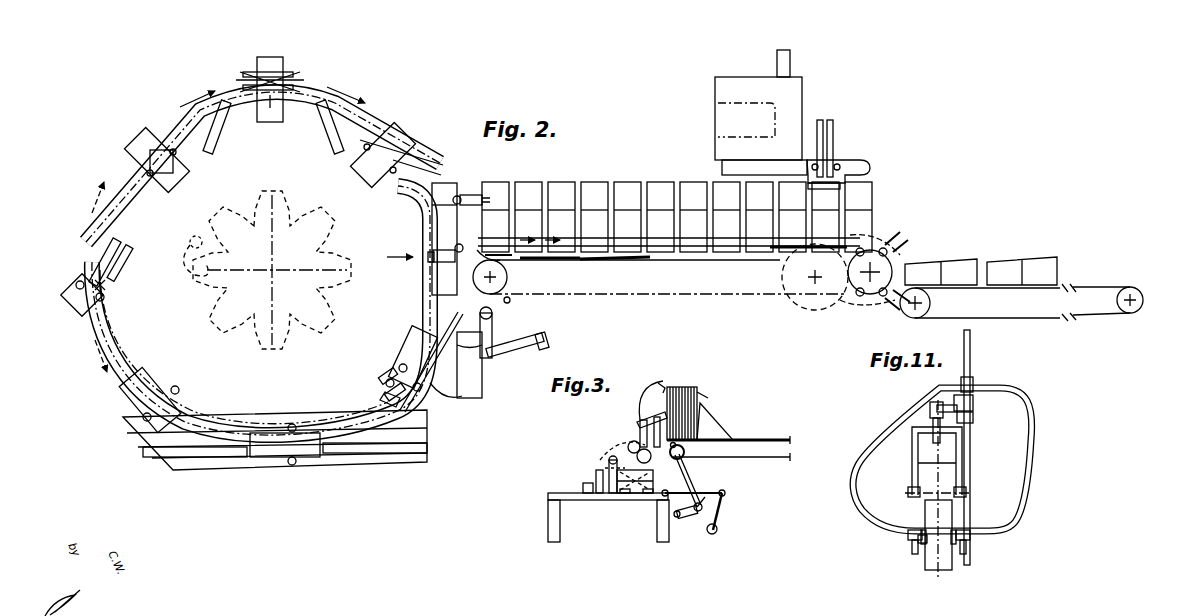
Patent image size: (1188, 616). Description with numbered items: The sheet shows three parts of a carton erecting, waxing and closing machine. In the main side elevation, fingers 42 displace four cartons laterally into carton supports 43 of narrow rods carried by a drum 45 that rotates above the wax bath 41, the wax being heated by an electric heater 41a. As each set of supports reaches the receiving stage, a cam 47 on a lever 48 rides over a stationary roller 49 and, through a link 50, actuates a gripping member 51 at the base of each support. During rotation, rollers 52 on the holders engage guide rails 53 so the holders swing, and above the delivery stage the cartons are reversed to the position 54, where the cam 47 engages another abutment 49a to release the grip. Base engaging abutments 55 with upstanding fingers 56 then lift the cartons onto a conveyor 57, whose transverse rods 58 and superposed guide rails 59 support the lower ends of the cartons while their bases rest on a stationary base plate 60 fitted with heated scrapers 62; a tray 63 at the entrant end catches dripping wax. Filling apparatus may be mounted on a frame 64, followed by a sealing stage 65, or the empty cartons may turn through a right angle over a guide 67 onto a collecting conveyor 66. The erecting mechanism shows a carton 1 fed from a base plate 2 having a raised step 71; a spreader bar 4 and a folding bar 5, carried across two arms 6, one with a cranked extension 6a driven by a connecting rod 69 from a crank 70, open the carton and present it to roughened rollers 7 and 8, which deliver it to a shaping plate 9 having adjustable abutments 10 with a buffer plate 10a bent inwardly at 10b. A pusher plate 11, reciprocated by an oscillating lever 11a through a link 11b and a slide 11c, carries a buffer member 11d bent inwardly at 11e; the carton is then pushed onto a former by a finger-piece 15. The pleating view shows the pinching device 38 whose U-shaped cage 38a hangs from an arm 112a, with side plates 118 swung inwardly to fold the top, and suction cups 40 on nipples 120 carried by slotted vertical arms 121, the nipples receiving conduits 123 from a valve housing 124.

In FIG. 2, the drum 45 is at (385, 137).
In FIG. 2, the reversed carton position 54 is at (444, 187).
In FIG. 2, the abutment 49a is at (460, 196).
In FIG. 2, the upstanding fingers 56 is at (430, 256).
In FIG. 2, the carton base engaging abutments 55 is at (452, 252).
In FIG. 2, the tray 63 is at (527, 262).
In FIG. 2, the transverse rods 58 is at (575, 293).
In FIG. 2, the heated scrapers 62 is at (600, 260).
In FIG. 2, the longitudinal guide rails 59 is at (631, 256).
In FIG. 2, the conveyor 57 is at (675, 255).
In FIG. 2, the stationary base plate 60 is at (698, 252).
In FIG. 2, the frame 64 is at (735, 161).
In FIG. 2, the sealing stage 65 is at (835, 160).
In FIG. 2, the guide 67 is at (895, 250).
In FIG. 2, the collecting conveyor 66 is at (980, 288).
In FIG. 2, the rollers 52 is at (395, 360).
In FIG. 2, the lever 48 is at (384, 375).
In FIG. 2, the link 50 is at (385, 388).
In FIG. 2, the gripping member 51 is at (380, 400).
In FIG. 2, the cam 47 is at (420, 363).
In FIG. 2, the stationary roller 49 is at (448, 370).
In FIG. 2, the fingers 42 is at (482, 381).
In FIG. 2, the carton supports 43 is at (447, 399).
In FIG. 2, the bath 41 is at (428, 430).
In FIG. 2, the electric heater 41a is at (230, 456).
In FIG. 2, the guide rails 53 is at (215, 412).
In FIG. 3, the folding bar 5 is at (664, 385).
In FIG. 3, the carton 1 is at (683, 390).
In FIG. 11, the carton 1 is at (925, 518).
In FIG. 3, the flap a is at (648, 411).
In FIG. 3, the arms 6 is at (668, 406).
In FIG. 3, the cranked extension 6a is at (684, 410).
In FIG. 3, the roller 7 is at (631, 443).
In FIG. 3, the roller 8 is at (637, 454).
In FIG. 3, the inwardly bent edge 11e is at (610, 450).
In FIG. 3, the spreader bar 4 is at (670, 455).
In FIG. 3, the raised step 71 is at (675, 458).
In FIG. 3, the base plate 2 is at (690, 470).
In FIG. 3, the connecting rod 69 is at (695, 492).
In FIG. 3, the oscillating lever 11a is at (722, 498).
In FIG. 3, the crank 70 is at (684, 518).
In FIG. 3, the link 11b is at (702, 506).
In FIG. 3, the abutments 10 is at (585, 491).
In FIG. 3, the buffer plate 10a is at (599, 471).
In FIG. 3, the inwardly bent edge 10b is at (610, 462).
In FIG. 3, the buffer member 11d is at (650, 478).
In FIG. 3, the slide 11c is at (633, 497).
In FIG. 3, the pusher plate 11 is at (647, 497).
In FIG. 3, the finger-piece 15 is at (612, 488).
In FIG. 3, the shaping plate 9 is at (574, 494).
In FIG. 11, the conduits 123 is at (1022, 498).
In FIG. 11, the side plates 118 is at (971, 470).
In FIG. 11, the housing 124 is at (974, 384).
In FIG. 11, the arm 112a is at (973, 416).
In FIG. 11, the cage 38a is at (931, 414).
In FIG. 11, the pinching device 38 is at (912, 475).
In FIG. 11, the nipples 120 is at (908, 540).
In FIG. 11, the suction cups 40 is at (920, 545).
In FIG. 11, the slotted vertical arms 121 is at (920, 546).